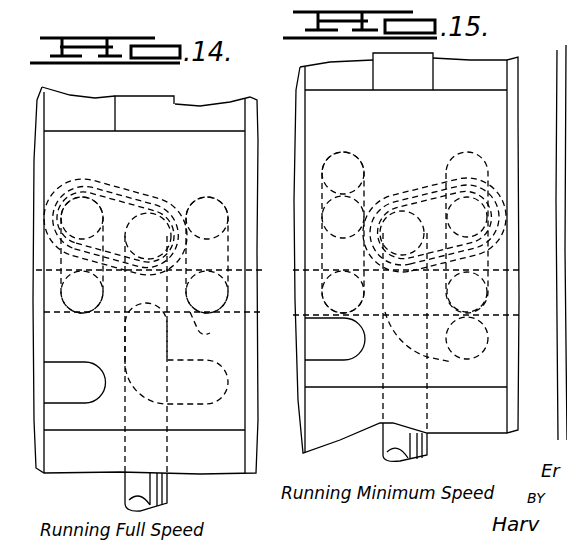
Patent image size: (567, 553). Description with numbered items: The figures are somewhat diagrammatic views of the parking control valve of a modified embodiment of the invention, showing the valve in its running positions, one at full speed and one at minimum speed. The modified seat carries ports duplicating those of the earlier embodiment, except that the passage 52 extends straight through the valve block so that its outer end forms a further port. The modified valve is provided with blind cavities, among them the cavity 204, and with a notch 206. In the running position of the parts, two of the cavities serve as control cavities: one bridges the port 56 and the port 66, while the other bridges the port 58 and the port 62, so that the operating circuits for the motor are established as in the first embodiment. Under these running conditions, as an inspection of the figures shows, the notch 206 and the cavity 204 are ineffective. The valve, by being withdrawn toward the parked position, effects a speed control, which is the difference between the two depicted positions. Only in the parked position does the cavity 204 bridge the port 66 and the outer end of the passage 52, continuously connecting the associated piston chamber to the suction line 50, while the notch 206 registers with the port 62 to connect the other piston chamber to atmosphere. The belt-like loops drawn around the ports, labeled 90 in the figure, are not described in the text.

In FIG. 14, the suction line 50 is at (125, 415).
In FIG. 15, the suction line 50 is at (383, 383).
In FIG. 14, the passage 52 is at (153, 213).
In FIG. 15, the passage 52 is at (407, 212).
In FIG. 14, the port 56 is at (208, 194).
In FIG. 15, the port 56 is at (462, 197).
In FIG. 14, the port 58 is at (84, 197).
In FIG. 15, the port 58 is at (364, 186).
In FIG. 14, the port 62 is at (77, 285).
In FIG. 15, the port 62 is at (390, 337).
In FIG. 14, the port 66 is at (213, 332).
In FIG. 15, the port 66 is at (467, 338).
In FIG. 14, the belt 90 is at (110, 193).
In FIG. 15, the belt 90 is at (392, 200).
In FIG. 14, the blind cavity 204 is at (190, 407).
In FIG. 15, the blind cavity 204 is at (452, 364).
In FIG. 14, the notch 206 is at (60, 362).
In FIG. 15, the notch 206 is at (313, 358).